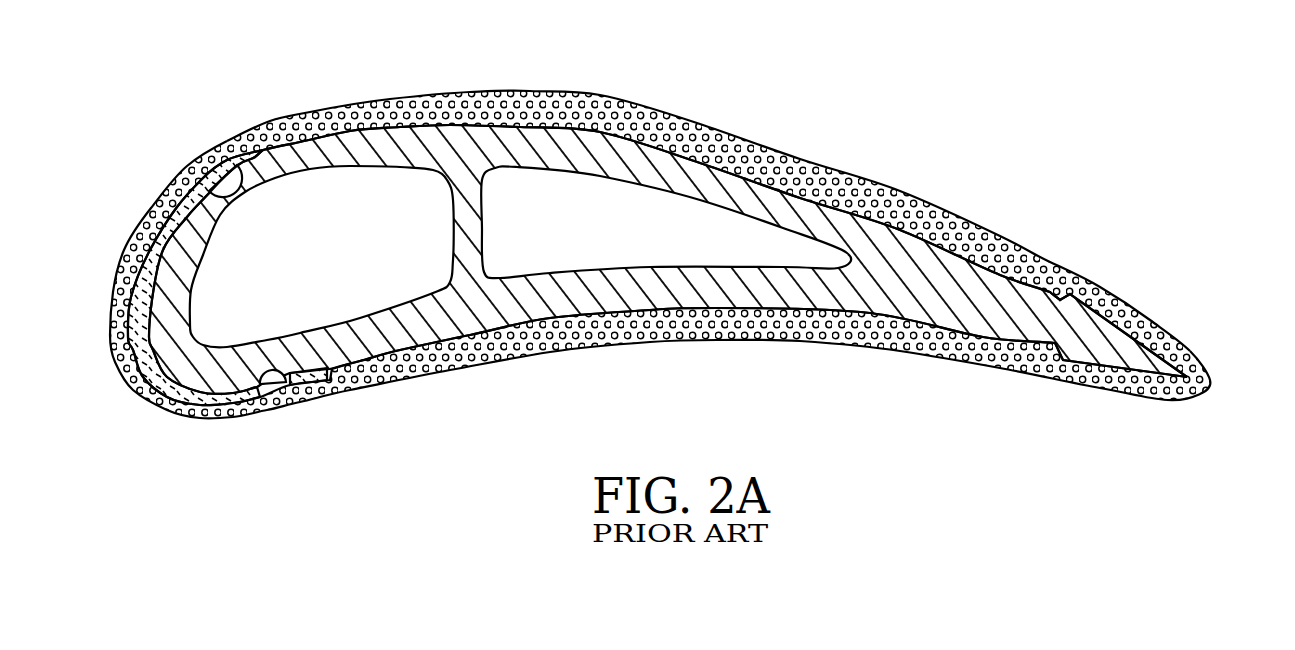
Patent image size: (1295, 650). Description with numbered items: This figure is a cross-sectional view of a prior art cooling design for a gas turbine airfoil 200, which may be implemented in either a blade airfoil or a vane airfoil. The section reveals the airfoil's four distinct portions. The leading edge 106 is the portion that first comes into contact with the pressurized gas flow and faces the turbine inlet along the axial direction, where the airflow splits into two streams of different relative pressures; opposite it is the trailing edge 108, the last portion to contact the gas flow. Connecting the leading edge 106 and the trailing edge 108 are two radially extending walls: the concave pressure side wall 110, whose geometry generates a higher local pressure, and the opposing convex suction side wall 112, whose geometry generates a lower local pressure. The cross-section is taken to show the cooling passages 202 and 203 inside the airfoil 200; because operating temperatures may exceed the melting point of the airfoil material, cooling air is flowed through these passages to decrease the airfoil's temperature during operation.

The leading edge 106 is at (122, 298).
The trailing edge 108 is at (1212, 384).
The pressure side wall 110 is at (719, 340).
The suction side wall 112 is at (564, 104).
The gas turbine airfoil 200 is at (393, 377).
The cooling passage 202 is at (233, 318).
The cooling passage 203 is at (728, 228).